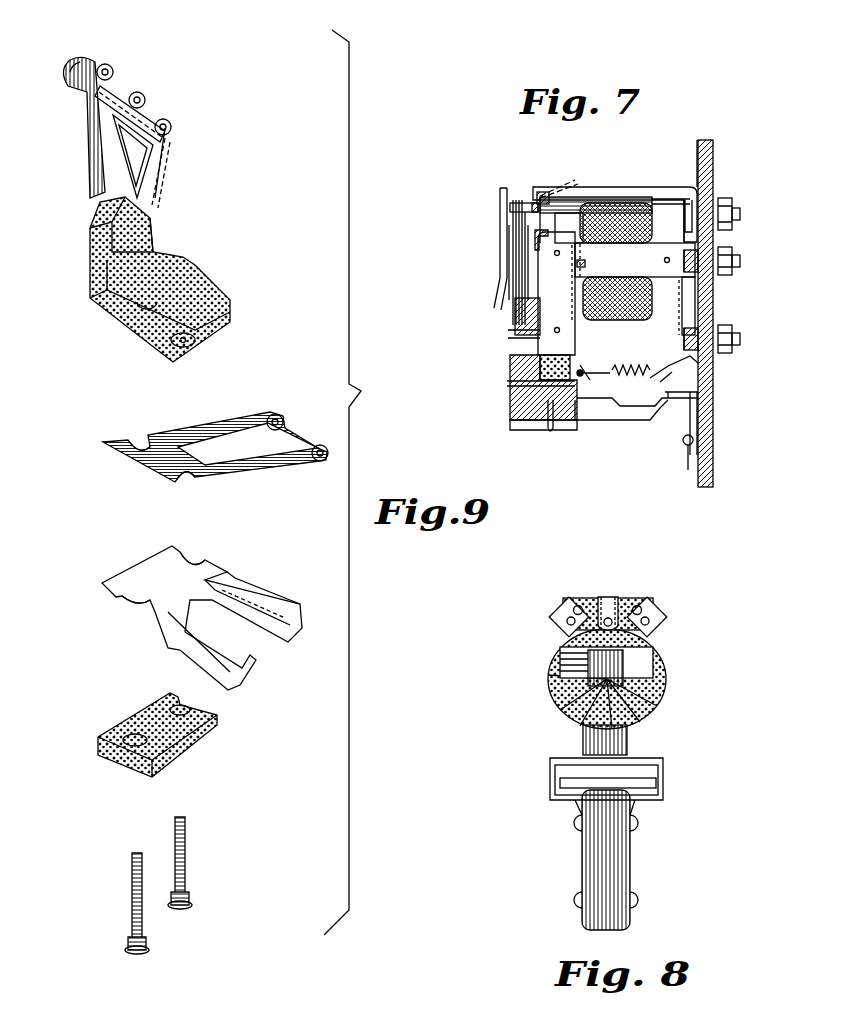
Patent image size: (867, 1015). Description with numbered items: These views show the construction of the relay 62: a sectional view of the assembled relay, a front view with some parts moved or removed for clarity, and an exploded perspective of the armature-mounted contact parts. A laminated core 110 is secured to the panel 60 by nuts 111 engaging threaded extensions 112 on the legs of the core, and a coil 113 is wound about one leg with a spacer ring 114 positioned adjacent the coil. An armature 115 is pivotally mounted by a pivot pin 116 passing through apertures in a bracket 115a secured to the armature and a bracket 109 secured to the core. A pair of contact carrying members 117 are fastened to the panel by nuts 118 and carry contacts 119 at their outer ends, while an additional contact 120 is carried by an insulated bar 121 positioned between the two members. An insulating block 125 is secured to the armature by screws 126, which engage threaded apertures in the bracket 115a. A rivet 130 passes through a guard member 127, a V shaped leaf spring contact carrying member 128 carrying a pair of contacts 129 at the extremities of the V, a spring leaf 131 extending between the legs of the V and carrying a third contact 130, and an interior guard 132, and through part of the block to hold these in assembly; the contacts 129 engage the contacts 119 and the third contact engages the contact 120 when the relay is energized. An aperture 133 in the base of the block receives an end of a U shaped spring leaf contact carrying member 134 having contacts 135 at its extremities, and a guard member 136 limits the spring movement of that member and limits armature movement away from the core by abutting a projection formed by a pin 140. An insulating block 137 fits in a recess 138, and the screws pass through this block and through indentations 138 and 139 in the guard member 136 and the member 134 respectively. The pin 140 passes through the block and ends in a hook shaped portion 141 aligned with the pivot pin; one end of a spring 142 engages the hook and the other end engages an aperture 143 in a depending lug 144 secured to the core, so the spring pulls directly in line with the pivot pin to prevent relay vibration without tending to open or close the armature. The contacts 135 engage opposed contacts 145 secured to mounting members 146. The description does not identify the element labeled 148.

In FIG. 7, the panel 60 is at (706, 475).
In FIG. 7, the relay 62 is at (640, 182).
In FIG. 8, the bracket 109 is at (552, 762).
In FIG. 7, the laminated core 110 is at (662, 303).
In FIG. 8, the laminated core 110 is at (627, 737).
In FIG. 7, the nuts 111 is at (727, 252).
In FIG. 7, the threaded extensions 112 is at (740, 262).
In FIG. 7, the coil 113 is at (648, 225).
In FIG. 8, the coil 113 is at (660, 698).
In FIG. 7, the spacer ring 114 is at (566, 200).
In FIG. 8, the spacer ring 114 is at (645, 662).
In FIG. 7, the armature 115 is at (557, 290).
In FIG. 8, the armature 115 is at (612, 872).
In FIG. 8, the bracket 115a is at (635, 802).
In FIG. 7, the pivot pin 116 is at (577, 422).
In FIG. 8, the pivot pin 116 is at (635, 775).
In FIG. 7, the contact carrying members 117 is at (628, 186).
In FIG. 8, the contact carrying members 117 is at (555, 603).
In FIG. 7, the nuts 118 is at (725, 200).
In FIG. 8, the contacts 119 is at (566, 624).
In FIG. 7, the additional contact 120 is at (543, 192).
In FIG. 8, the additional contact 120 is at (610, 605).
In FIG. 7, the insulated bar 121 is at (560, 195).
In FIG. 8, the insulated bar 121 is at (596, 600).
In FIG. 7, the insulating block 125 is at (510, 400).
In FIG. 9, the insulating block 125 is at (190, 255).
In FIG. 7, the screws 126 is at (548, 425).
In FIG. 9, the screws 126 is at (182, 858).
In FIG. 7, the guard member 127 is at (500, 262).
In FIG. 9, the guard member 127 is at (70, 65).
In FIG. 7, the V shaped leaf spring contact carrying member 128 is at (516, 200).
In FIG. 9, the V shaped leaf spring contact carrying member 128 is at (168, 140).
In FIG. 9, the contacts 129 is at (105, 64).
In FIG. 7, the rivet 130 is at (512, 203).
In FIG. 9, the rivet 130 is at (142, 92).
In FIG. 7, the spring leaf 131 is at (518, 240).
In FIG. 9, the spring leaf 131 is at (135, 160).
In FIG. 7, the guard 132 is at (518, 278).
In FIG. 9, the guard 132 is at (148, 190).
In FIG. 9, the aperture 133 is at (160, 328).
In FIG. 9, the U shaped spring leaf contact carrying member 134 is at (190, 432).
In FIG. 7, the contacts 135 is at (700, 412).
In FIG. 9, the contacts 135 is at (284, 424).
In FIG. 7, the guard member 136 is at (612, 420).
In FIG. 9, the guard member 136 is at (210, 572).
In FIG. 7, the insulating block 137 is at (535, 420).
In FIG. 9, the insulating block 137 is at (178, 760).
In FIG. 9, the indentations 138 is at (185, 560).
In FIG. 9, the indentations 139 is at (148, 440).
In FIG. 7, the pin 140 is at (507, 384).
In FIG. 7, the hook shaped portion 141 is at (592, 378).
In FIG. 7, the spring 142 is at (625, 368).
In FIG. 7, the aperture 143 is at (700, 378).
In FIG. 7, the depending lug 144 is at (660, 410).
In FIG. 7, the opposed contacts 145 is at (684, 444).
In FIG. 7, the mounting members 146 is at (690, 462).
In FIG. 7, the plate 148 is at (512, 338).